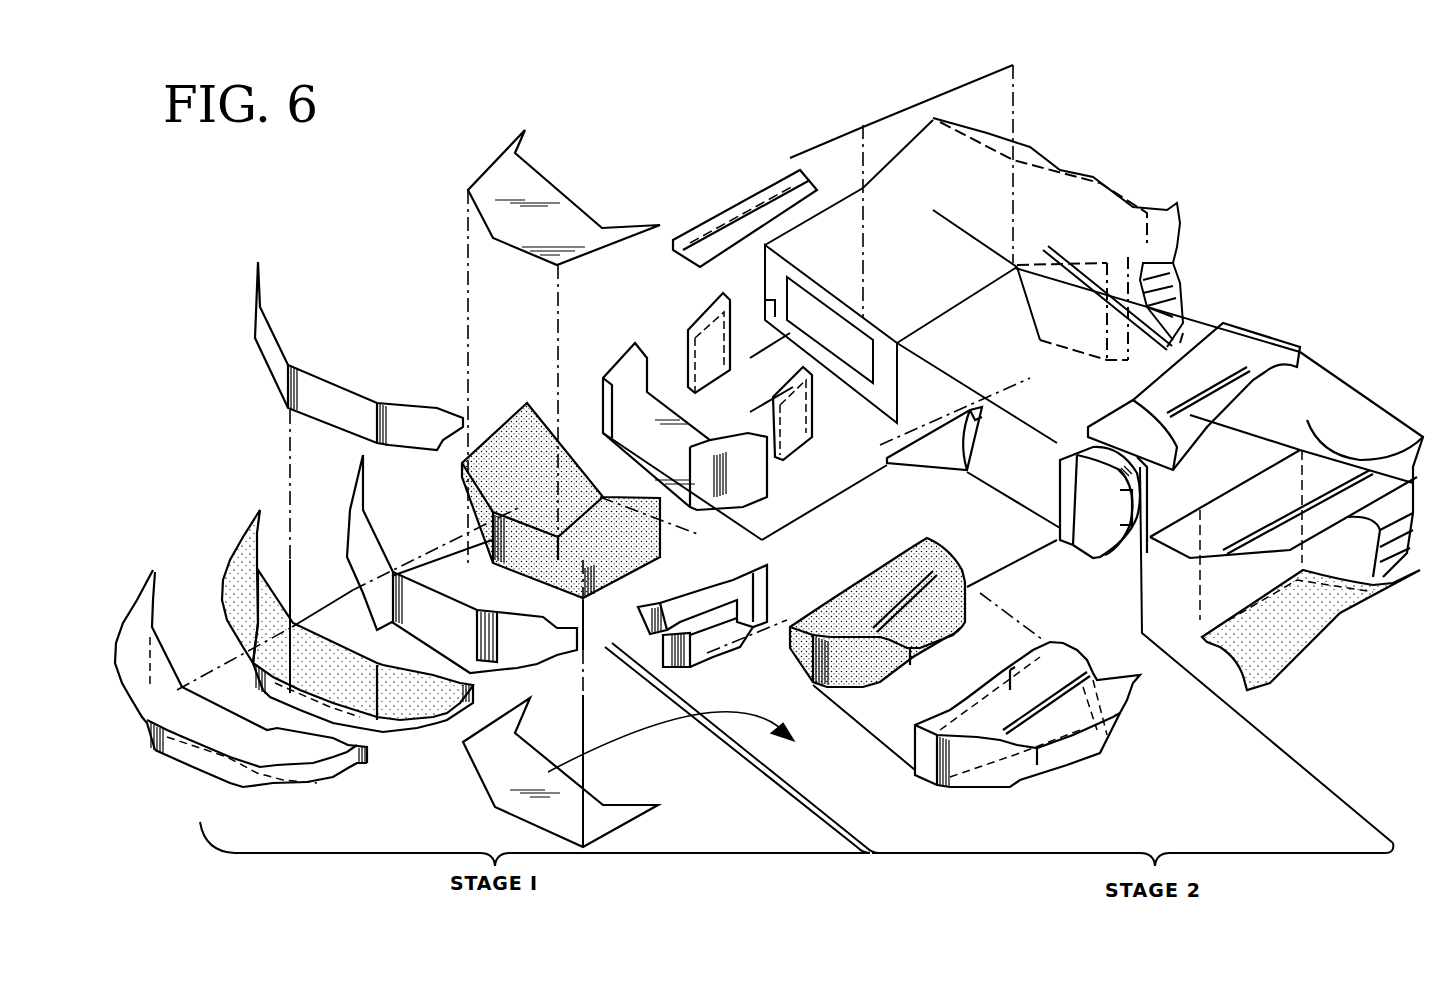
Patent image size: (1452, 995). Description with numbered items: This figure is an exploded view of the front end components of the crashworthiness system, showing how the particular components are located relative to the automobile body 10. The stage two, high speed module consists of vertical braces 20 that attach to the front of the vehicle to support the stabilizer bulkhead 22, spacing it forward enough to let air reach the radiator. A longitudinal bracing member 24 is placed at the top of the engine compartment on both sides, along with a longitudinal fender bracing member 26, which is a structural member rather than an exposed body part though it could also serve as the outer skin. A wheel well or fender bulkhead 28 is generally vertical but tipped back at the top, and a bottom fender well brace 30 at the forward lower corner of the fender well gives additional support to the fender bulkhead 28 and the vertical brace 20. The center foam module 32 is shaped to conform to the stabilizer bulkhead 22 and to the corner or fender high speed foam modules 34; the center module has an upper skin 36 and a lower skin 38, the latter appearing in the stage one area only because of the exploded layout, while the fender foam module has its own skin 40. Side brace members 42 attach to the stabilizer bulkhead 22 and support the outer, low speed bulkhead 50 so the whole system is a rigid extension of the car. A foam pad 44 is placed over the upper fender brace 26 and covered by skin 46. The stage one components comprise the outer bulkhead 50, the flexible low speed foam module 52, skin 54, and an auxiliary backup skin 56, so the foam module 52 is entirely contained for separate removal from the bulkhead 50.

The vehicle body 10 is at (1047, 150).
The vertical braces 20 is at (690, 320).
The stabilizer bulkhead 22 is at (657, 387).
The longitudinal bracing member 24 is at (727, 227).
The longitudinal fender bracing member 26 is at (1237, 345).
The fender bulkhead 28 is at (1097, 530).
The bottom fender well brace 30 is at (967, 440).
The center foam module 32 is at (540, 442).
The fender high speed foam modules 34 is at (892, 547).
The upper skin 36 is at (547, 172).
The lower skin 38 is at (643, 772).
The skin 40 is at (1082, 655).
The side brace members 42 is at (767, 597).
The foam pad 44 is at (1287, 630).
The skin 46 is at (1320, 473).
The outer bulkhead 50 is at (367, 543).
The low speed foam module 52 is at (233, 543).
The skin 54 is at (133, 613).
The auxiliary backup skin 56 is at (327, 378).